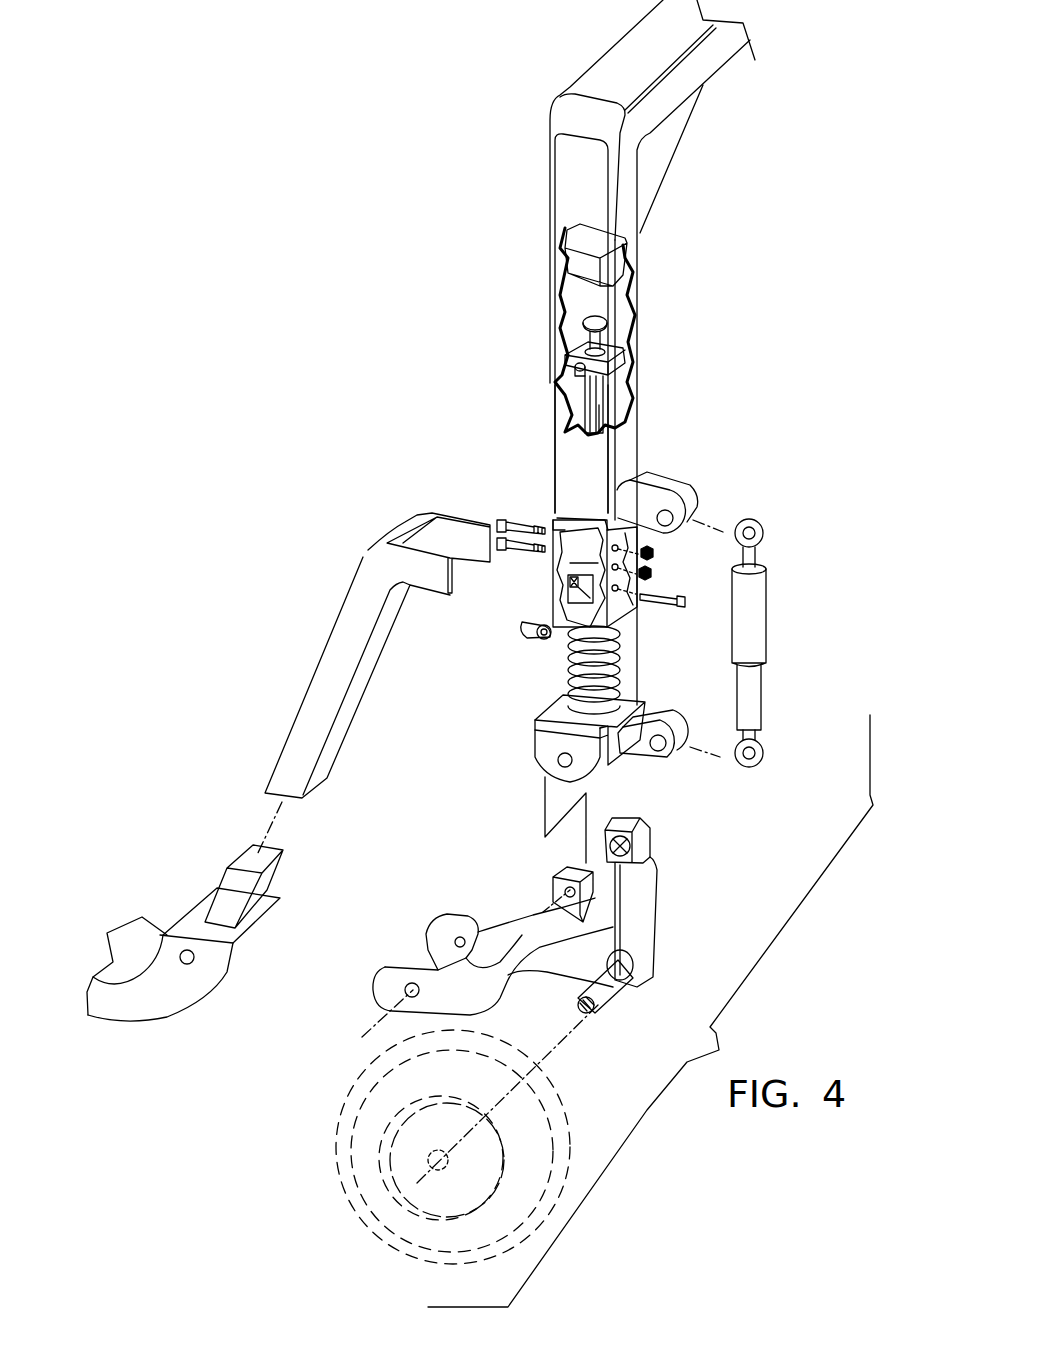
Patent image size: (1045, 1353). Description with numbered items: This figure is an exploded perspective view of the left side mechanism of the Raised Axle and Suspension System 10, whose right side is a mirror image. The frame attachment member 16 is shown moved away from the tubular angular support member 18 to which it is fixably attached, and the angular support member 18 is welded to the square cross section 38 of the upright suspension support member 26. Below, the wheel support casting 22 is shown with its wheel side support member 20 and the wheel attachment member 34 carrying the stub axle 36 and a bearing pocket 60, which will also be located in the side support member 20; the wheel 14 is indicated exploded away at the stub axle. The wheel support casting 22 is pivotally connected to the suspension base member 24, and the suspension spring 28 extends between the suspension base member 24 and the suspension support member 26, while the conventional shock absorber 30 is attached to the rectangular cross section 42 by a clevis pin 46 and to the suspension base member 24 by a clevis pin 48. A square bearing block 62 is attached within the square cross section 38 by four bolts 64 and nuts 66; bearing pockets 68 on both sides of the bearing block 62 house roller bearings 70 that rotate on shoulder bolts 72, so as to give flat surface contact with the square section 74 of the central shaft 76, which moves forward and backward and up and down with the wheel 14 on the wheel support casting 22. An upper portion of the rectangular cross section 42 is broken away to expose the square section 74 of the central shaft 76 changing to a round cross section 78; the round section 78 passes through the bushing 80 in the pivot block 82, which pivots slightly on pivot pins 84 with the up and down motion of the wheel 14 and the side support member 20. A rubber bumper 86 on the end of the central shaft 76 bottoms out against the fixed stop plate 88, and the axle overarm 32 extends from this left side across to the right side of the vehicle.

The Raised Axle and Suspension System 10 is at (425, 368).
The wheel 14 is at (370, 1157).
The frame attachment member 16 is at (135, 942).
The angular support member 18 is at (350, 648).
The wheel side support member 20 is at (512, 967).
The wheel support casting 22 is at (490, 912).
The suspension base member 24 is at (553, 720).
The suspension support member 26 is at (557, 443).
The suspension spring 28 is at (620, 682).
The shock absorber 30 is at (752, 607).
The axle overarm 32 is at (615, 72).
The wheel attachment member 34 is at (637, 915).
The stub axle 36 is at (613, 993).
The square cross section 38 is at (563, 600).
The rectangular cross section 42 is at (568, 492).
The clevis pin 46 is at (670, 502).
The clevis pin 48 is at (667, 760).
The bearing pocket 60 is at (643, 825).
The square bearing block 62 is at (584, 553).
The bolts 64 is at (527, 540).
The nuts 66 is at (650, 555).
The bearing pockets 68 is at (572, 582).
The roller bearings 70 is at (517, 625).
The shoulder bolts 72 is at (665, 603).
The square section 74 is at (608, 418).
The central shaft 76 is at (605, 403).
The round cross section 78 is at (627, 390).
The bushing 80 is at (605, 343).
The pivot block 82 is at (625, 347).
The pivot pins 84 is at (574, 367).
The rubber bumper 86 is at (597, 317).
The fixed stop plate 88 is at (583, 240).